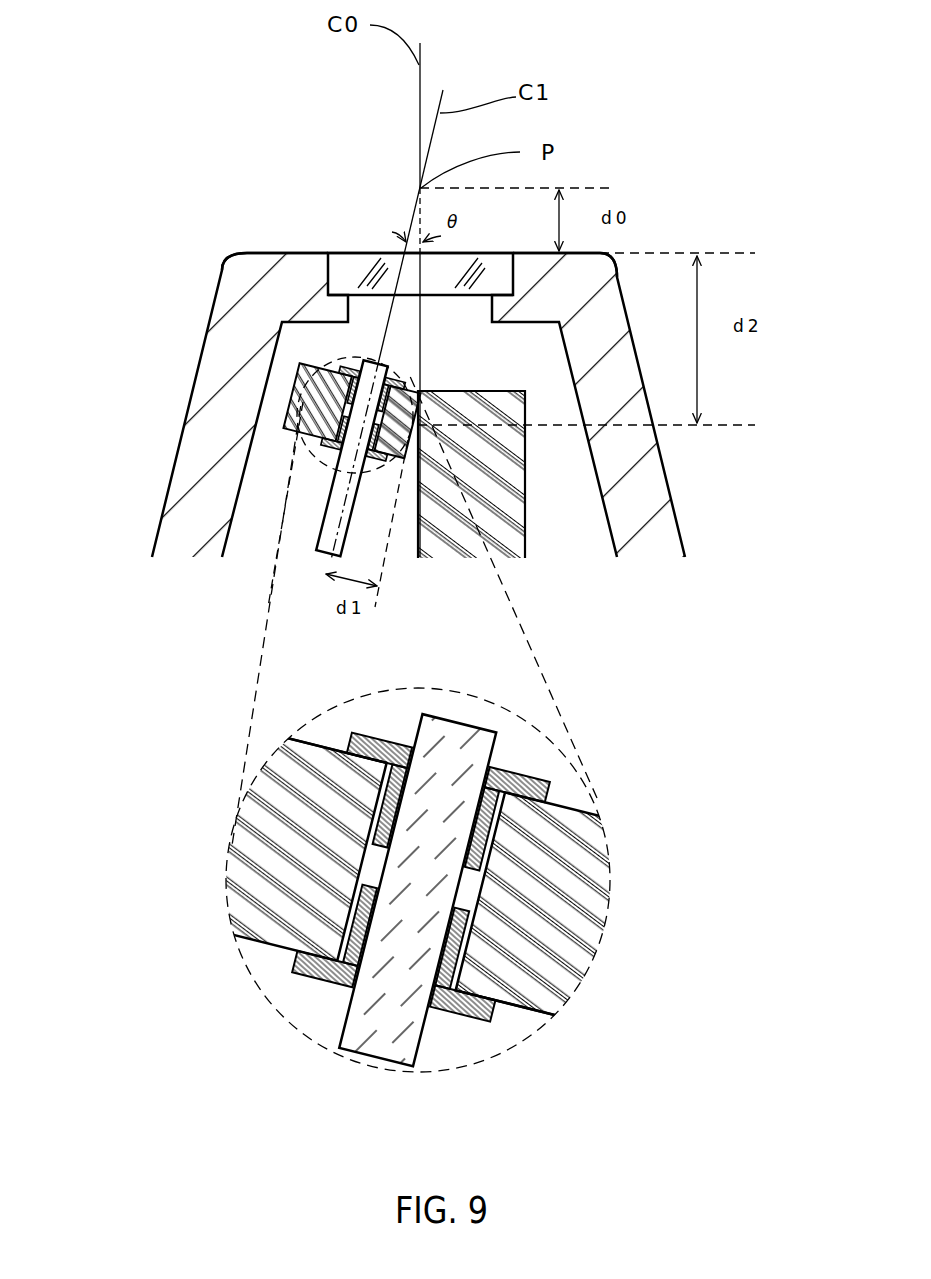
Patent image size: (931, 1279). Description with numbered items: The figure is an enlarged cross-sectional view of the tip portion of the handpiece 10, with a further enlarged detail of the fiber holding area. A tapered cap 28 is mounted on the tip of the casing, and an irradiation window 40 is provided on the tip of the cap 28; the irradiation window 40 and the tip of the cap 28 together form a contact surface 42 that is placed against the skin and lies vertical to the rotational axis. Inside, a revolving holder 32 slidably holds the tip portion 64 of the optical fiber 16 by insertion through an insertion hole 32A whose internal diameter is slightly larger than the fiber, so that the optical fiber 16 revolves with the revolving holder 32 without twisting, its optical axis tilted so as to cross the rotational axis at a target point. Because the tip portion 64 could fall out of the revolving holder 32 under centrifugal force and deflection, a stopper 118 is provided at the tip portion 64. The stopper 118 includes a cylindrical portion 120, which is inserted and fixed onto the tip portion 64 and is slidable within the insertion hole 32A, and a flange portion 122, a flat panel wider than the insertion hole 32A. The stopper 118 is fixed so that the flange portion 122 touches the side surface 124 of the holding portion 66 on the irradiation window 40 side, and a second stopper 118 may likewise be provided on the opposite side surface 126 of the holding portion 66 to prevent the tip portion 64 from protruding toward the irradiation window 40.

The handpiece 10 is at (160, 73).
The optical fiber 16 is at (318, 540).
The cap 28 is at (637, 515).
The revolving holder 32 is at (472, 543).
The insertion hole 32A is at (303, 390).
The irradiation window 40 is at (358, 267).
The contact surface 42 is at (302, 253).
The tip portion 64 is at (365, 358).
The holding portion 66 is at (312, 438).
The stopper 118 is at (398, 365).
The cylindrical portion 120 is at (340, 932).
The flange portion 122 is at (318, 975).
The side surface 124 is at (335, 750).
The side surface 126 is at (517, 1008).